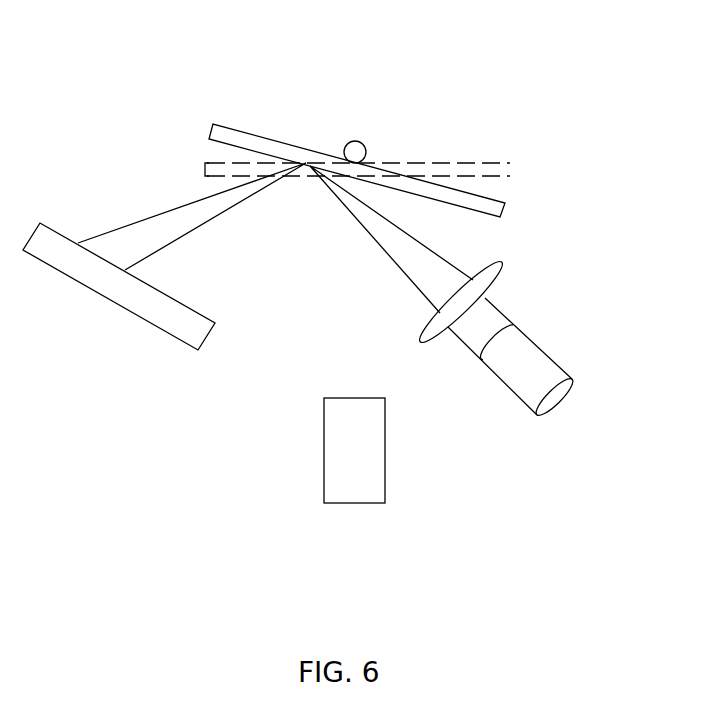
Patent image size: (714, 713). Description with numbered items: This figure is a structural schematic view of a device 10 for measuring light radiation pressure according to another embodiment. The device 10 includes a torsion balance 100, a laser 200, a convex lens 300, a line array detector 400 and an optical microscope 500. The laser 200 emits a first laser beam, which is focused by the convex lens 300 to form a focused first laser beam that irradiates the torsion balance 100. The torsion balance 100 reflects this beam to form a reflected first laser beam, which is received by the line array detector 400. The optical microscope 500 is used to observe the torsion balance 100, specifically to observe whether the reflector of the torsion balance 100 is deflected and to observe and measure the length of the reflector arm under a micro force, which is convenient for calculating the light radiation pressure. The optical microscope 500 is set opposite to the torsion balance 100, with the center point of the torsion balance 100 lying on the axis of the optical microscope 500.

The device for measuring light radiation pressure 10 is at (377, 50).
The torsion balance 100 is at (260, 135).
The laser 200 is at (537, 370).
The convex lens 300 is at (490, 273).
The line array detector 400 is at (183, 330).
The optical microscope 500 is at (367, 482).